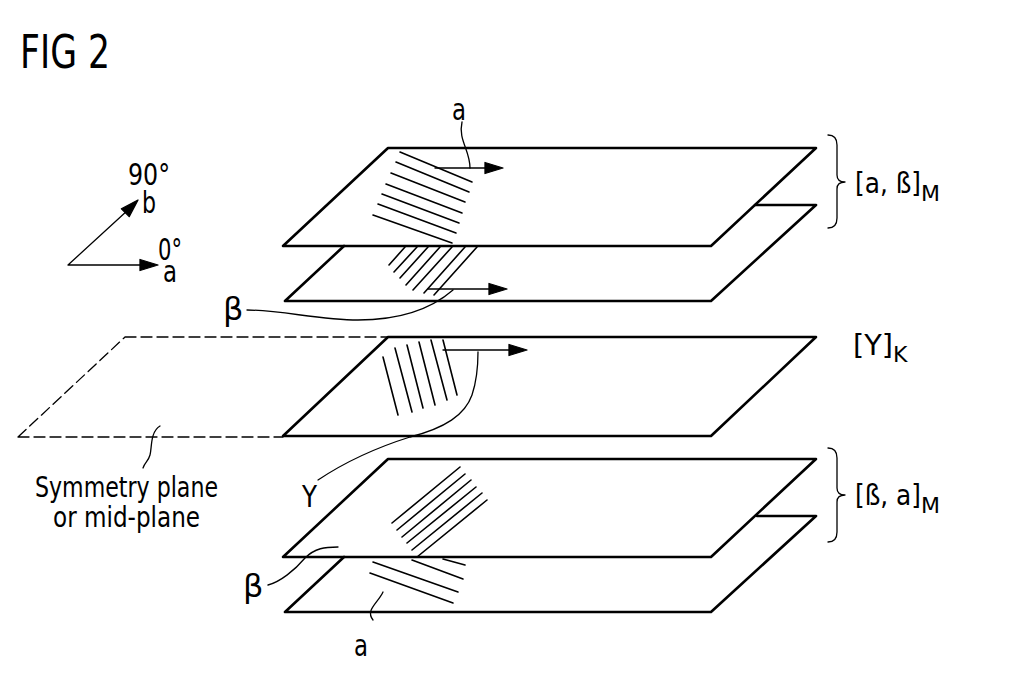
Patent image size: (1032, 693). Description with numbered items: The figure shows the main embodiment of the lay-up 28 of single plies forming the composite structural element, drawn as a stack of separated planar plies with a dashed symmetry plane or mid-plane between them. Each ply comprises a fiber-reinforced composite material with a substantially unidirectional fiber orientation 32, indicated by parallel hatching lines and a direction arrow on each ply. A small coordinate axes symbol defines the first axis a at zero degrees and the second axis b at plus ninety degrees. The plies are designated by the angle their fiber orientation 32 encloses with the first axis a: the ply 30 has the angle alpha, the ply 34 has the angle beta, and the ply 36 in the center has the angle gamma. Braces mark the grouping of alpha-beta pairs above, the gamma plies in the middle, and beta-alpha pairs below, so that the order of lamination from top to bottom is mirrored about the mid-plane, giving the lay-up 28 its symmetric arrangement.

The lay-up 28 is at (316, 161).
The ply 30 is at (778, 157).
The unidirectional fiber orientation 32 is at (386, 213).
The ply 34 is at (760, 232).
The ply 36 is at (778, 352).